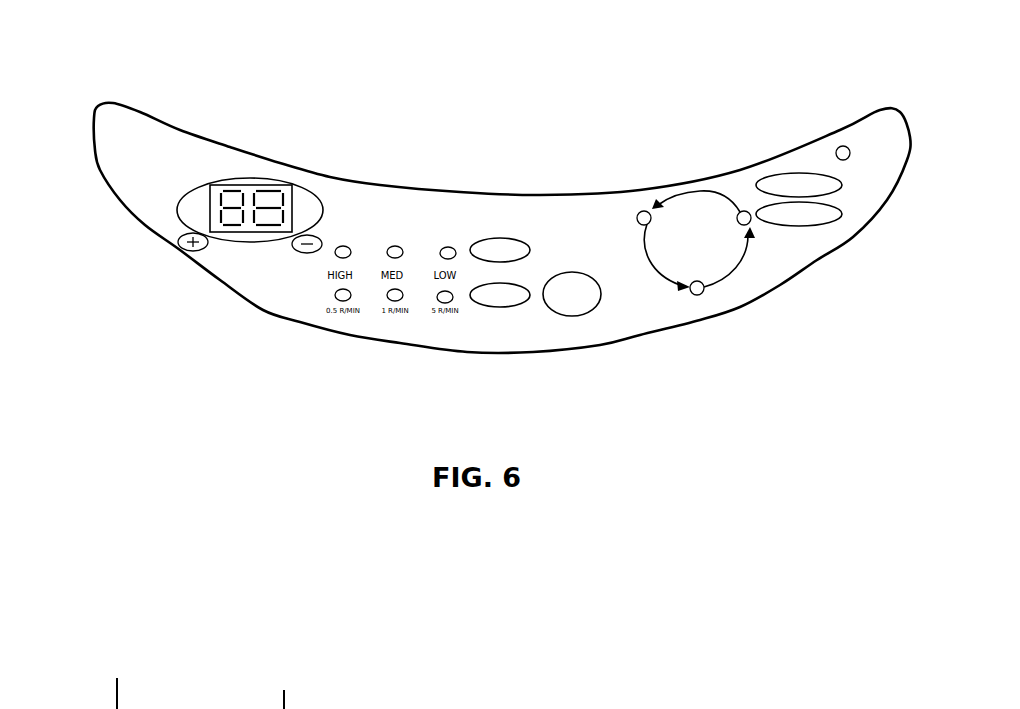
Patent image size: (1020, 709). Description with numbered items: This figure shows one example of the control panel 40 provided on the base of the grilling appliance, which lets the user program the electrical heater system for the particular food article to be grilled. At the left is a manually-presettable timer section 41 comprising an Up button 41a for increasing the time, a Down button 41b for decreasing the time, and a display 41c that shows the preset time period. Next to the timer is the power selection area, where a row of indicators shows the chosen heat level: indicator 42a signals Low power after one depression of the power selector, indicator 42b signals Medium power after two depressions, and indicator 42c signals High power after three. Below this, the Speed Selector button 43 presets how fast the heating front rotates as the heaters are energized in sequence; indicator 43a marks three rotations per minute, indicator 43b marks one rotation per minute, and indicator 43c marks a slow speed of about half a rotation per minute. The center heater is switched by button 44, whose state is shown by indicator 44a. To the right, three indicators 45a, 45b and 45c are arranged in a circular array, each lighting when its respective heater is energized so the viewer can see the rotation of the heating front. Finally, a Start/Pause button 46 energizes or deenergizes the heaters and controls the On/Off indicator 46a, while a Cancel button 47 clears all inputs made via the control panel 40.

The control panel 40 is at (157, 114).
The timer section 41 is at (247, 110).
The Up button 41a is at (181, 248).
The Down button 41b is at (302, 252).
The display 41c is at (275, 193).
The indicator 42a is at (503, 238).
The indicator 42b is at (448, 247).
The indicator 42c is at (395, 246).
The Speed Selector button 43 is at (510, 308).
The indicator 43a is at (452, 300).
The indicator 43b is at (392, 300).
The indicator 43c is at (341, 301).
The button 44 is at (568, 318).
The indicator 44a is at (603, 298).
The indicator 45a is at (638, 215).
The indicator 45b is at (690, 296).
The indicator 45c is at (740, 212).
The Start/Pause button 46 is at (797, 173).
The On/Off indicator 46a is at (843, 146).
The Cancel button 47 is at (800, 227).